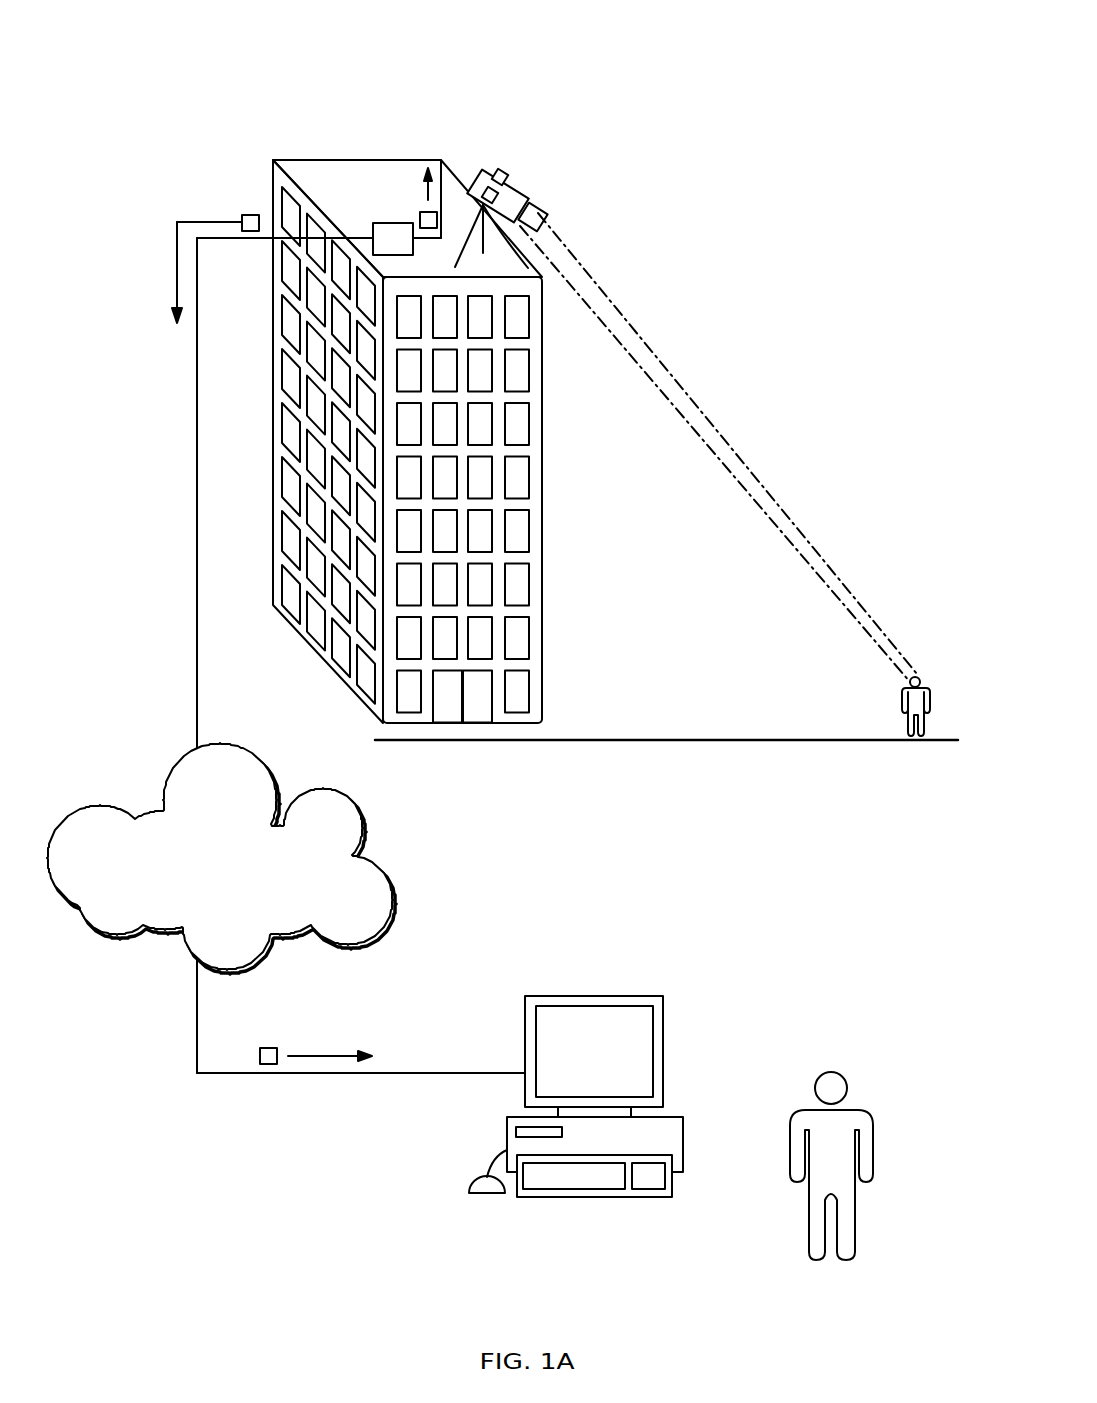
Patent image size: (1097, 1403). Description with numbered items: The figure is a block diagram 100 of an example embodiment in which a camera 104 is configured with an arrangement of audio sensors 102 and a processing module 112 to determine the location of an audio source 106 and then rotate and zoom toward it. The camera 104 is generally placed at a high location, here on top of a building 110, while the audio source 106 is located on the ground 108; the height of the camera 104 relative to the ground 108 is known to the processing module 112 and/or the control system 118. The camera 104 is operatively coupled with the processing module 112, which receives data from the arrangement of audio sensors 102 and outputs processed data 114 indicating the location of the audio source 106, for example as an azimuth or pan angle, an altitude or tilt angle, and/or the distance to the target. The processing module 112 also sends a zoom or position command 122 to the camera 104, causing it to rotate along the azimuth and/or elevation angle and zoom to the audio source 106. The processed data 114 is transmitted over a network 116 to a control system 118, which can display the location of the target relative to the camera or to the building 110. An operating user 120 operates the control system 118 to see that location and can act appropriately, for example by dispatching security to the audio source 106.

The block diagram 100 is at (810, 18).
The arrangement of audio sensors 102 is at (497, 187).
The camera 104 is at (527, 195).
The audio source 106 is at (902, 708).
The ground 108 is at (667, 742).
The building 110 is at (542, 608).
The processing module 112 is at (383, 223).
The processed data 114 is at (230, 1128).
The network 116 is at (210, 899).
The control system 118 is at (665, 1008).
The operating user 120 is at (810, 1223).
The zoom or position command 122 is at (422, 212).